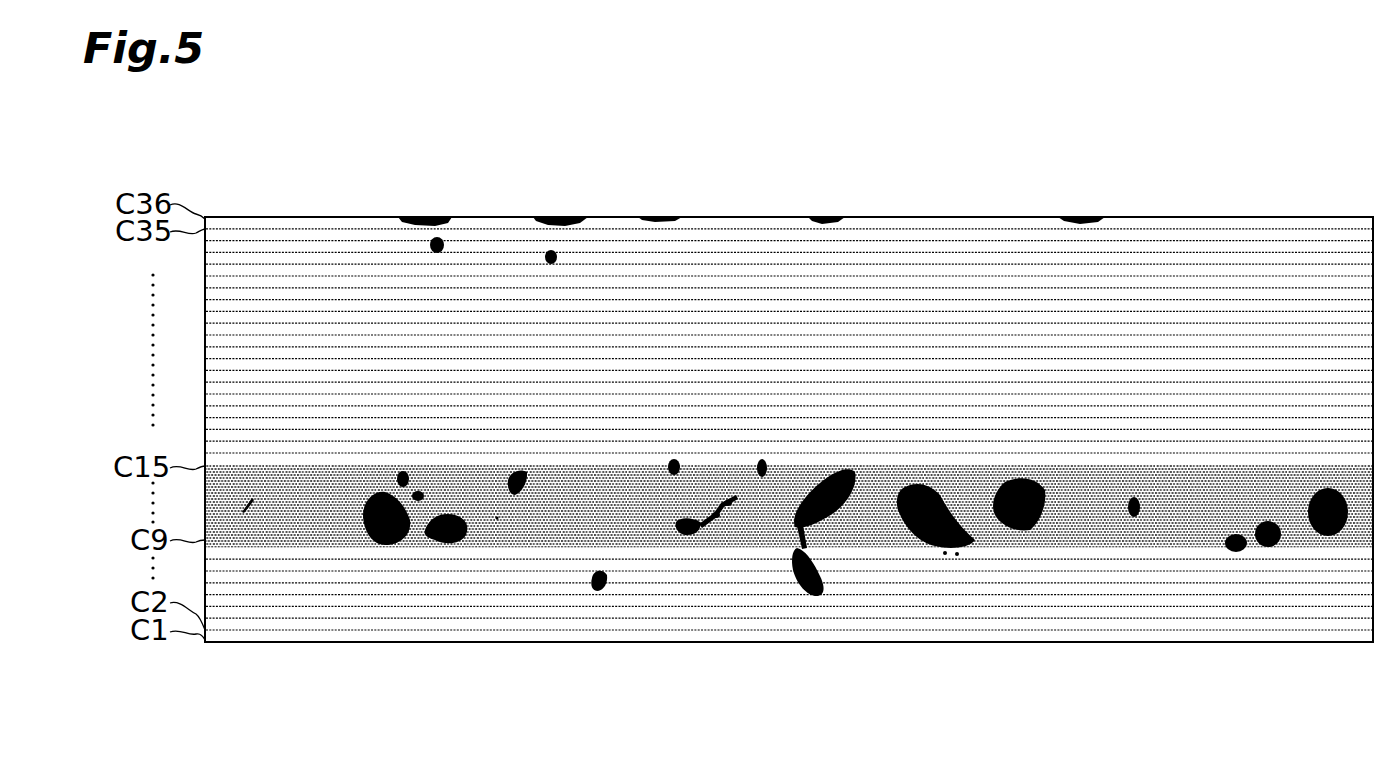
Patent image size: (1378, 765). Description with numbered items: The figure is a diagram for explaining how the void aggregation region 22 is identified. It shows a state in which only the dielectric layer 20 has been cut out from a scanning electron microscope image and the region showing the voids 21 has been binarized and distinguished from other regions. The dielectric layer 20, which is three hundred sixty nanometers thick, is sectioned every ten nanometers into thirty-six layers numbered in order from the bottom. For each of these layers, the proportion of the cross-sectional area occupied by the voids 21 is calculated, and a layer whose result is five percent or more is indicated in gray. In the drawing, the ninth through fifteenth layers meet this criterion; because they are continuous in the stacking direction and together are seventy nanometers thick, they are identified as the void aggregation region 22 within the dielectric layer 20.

The dielectric layer 20 is at (1287, 213).
The voids 21 is at (808, 590).
The void aggregation region 22 is at (112, 450).